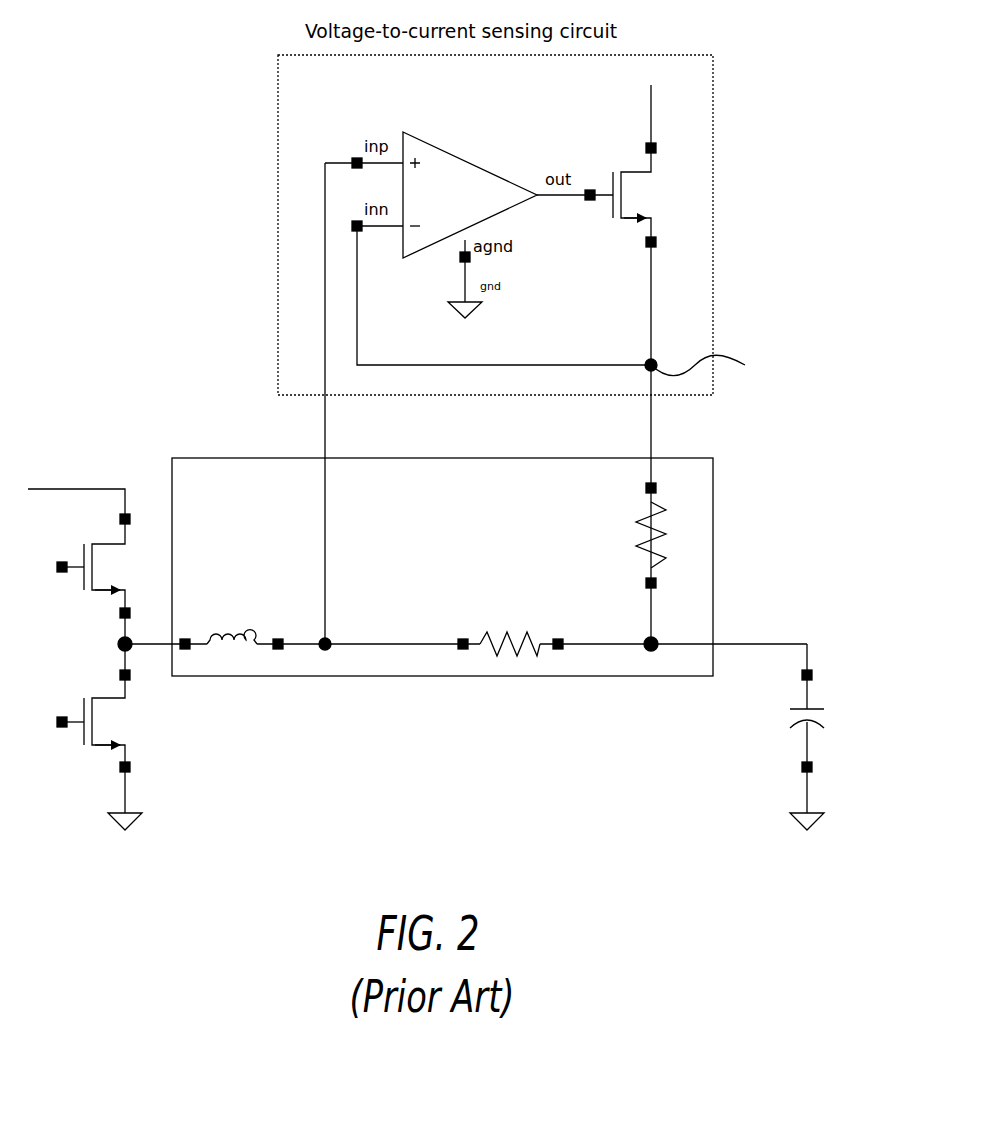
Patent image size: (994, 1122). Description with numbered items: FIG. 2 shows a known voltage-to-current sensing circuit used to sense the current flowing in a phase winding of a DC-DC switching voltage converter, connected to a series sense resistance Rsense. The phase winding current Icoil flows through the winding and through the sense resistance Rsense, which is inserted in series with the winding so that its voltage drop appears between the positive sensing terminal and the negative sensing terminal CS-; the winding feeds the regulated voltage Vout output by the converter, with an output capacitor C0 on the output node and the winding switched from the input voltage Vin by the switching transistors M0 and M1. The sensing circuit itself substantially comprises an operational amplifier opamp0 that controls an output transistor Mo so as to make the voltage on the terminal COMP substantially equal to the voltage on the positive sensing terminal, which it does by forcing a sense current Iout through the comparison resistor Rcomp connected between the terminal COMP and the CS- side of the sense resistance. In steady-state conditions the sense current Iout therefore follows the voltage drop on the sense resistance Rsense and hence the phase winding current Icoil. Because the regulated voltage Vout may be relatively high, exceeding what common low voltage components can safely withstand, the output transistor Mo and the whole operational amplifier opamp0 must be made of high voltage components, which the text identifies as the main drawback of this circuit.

The operational amplifier opamp0 is at (478, 195).
The output transistor Mo is at (649, 225).
The sense current Iout is at (634, 104).
The terminal COMP is at (721, 367).
The sensing terminal CS− CS- is at (667, 633).
The comparison resistor Rcomp is at (614, 535).
The sense resistance Rsense is at (498, 630).
The phase winding current Icoil is at (268, 617).
The regulated voltage Vout is at (763, 626).
The output capacitor C0 is at (816, 737).
The input voltage Vin is at (76, 491).
The high-side switch transistor M0 is at (105, 579).
The low-side switch transistor M1 is at (108, 737).